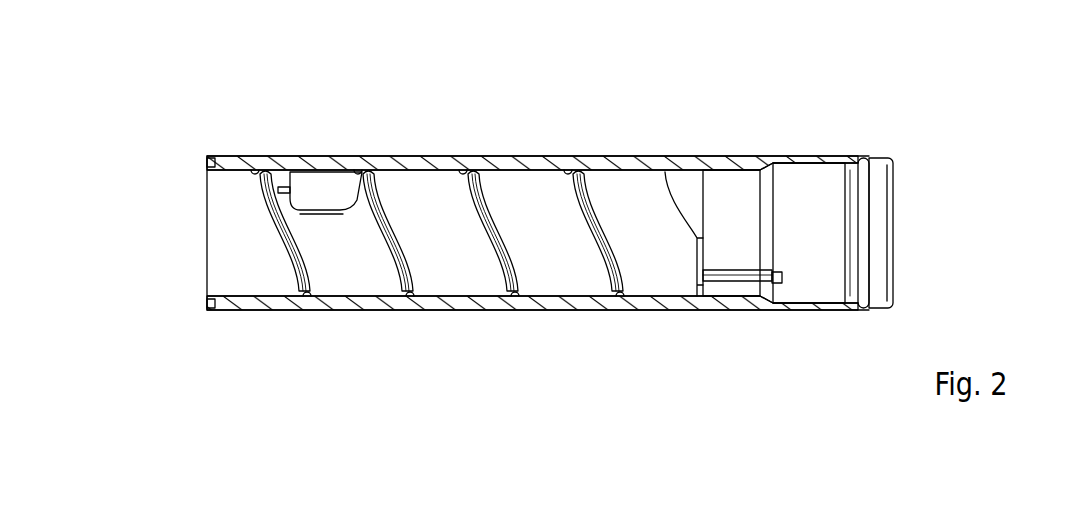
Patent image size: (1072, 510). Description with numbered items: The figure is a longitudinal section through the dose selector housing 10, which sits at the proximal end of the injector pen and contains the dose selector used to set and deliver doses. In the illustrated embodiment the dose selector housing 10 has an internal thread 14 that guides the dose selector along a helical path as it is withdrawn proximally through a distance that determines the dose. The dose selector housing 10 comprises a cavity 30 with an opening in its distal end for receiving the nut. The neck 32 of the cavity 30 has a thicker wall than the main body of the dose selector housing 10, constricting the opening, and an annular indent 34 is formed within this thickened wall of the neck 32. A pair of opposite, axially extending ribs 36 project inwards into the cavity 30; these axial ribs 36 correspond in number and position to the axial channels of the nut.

The dose selector housing 10 is at (640, 156).
The internal thread 14 is at (567, 172).
The cavity 30 is at (823, 229).
The neck 32 is at (883, 158).
The annular indent 34 is at (859, 158).
The axially extending ribs 36 is at (748, 270).